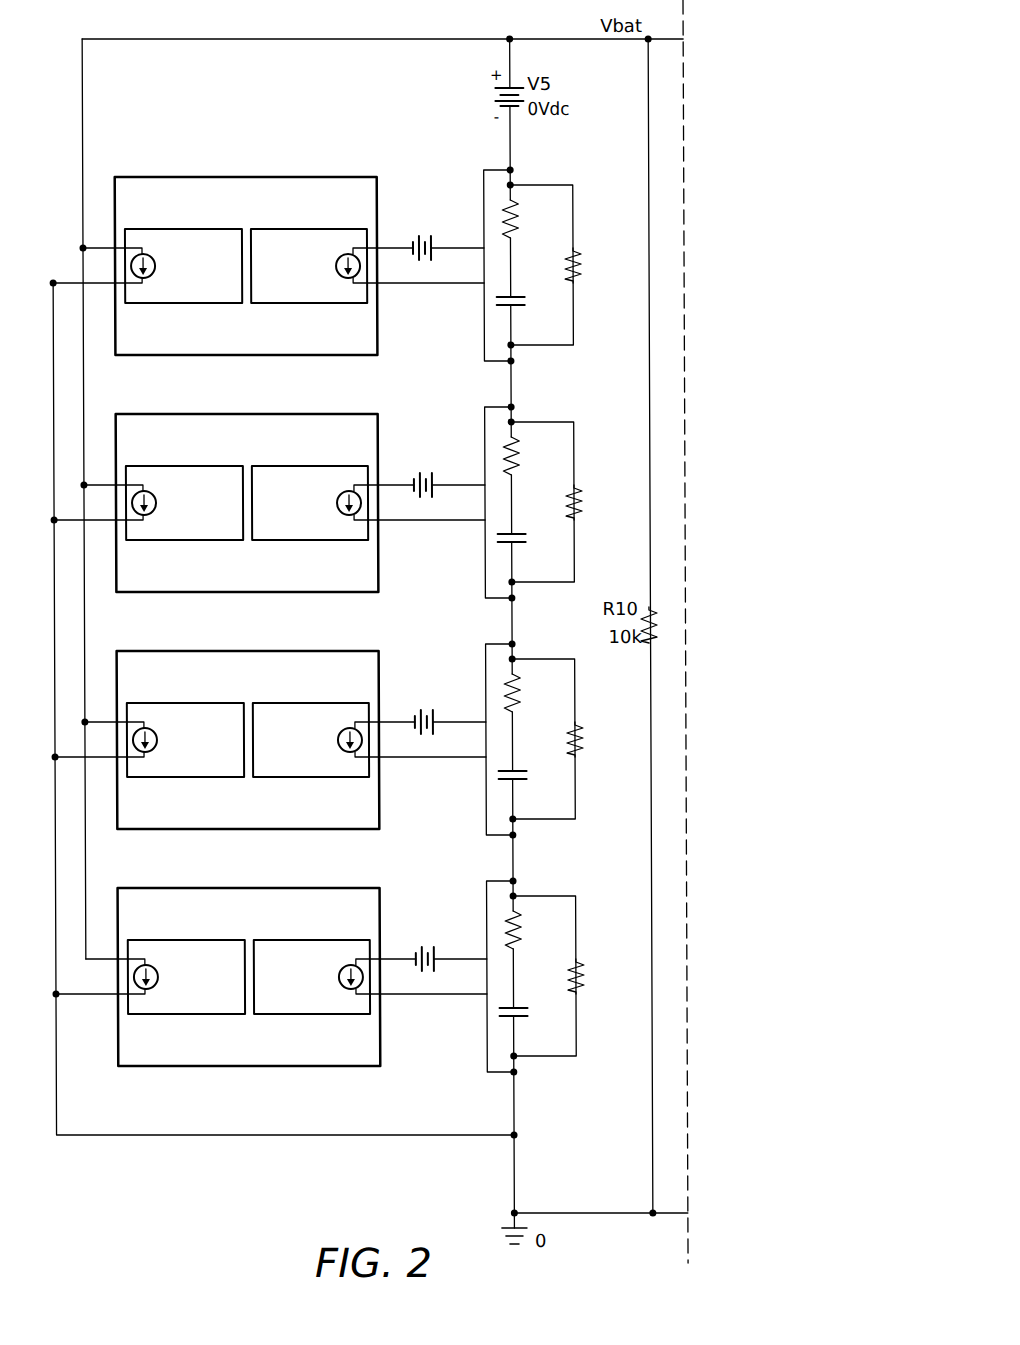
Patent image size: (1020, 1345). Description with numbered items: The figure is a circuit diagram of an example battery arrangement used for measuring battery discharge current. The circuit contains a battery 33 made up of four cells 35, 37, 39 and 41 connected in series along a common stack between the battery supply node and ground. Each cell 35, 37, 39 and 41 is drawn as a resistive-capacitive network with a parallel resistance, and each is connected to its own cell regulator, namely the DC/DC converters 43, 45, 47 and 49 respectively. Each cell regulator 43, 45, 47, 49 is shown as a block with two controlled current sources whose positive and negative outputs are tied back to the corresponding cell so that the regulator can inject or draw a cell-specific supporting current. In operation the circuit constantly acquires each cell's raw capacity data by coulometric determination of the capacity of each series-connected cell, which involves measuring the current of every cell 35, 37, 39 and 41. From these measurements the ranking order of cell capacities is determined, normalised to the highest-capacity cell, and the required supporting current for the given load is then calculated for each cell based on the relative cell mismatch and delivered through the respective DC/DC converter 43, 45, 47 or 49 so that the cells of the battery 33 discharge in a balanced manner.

The battery 33 is at (485, 1175).
The cell 35 is at (572, 197).
The cell 37 is at (563, 490).
The cell 39 is at (563, 727).
The cell 41 is at (564, 964).
The cell regulator DC/DC converter 43 is at (376, 340).
The cell regulator DC/DC converter 45 is at (267, 503).
The cell regulator DC/DC converter 47 is at (268, 740).
The cell regulator DC/DC converter 49 is at (269, 977).